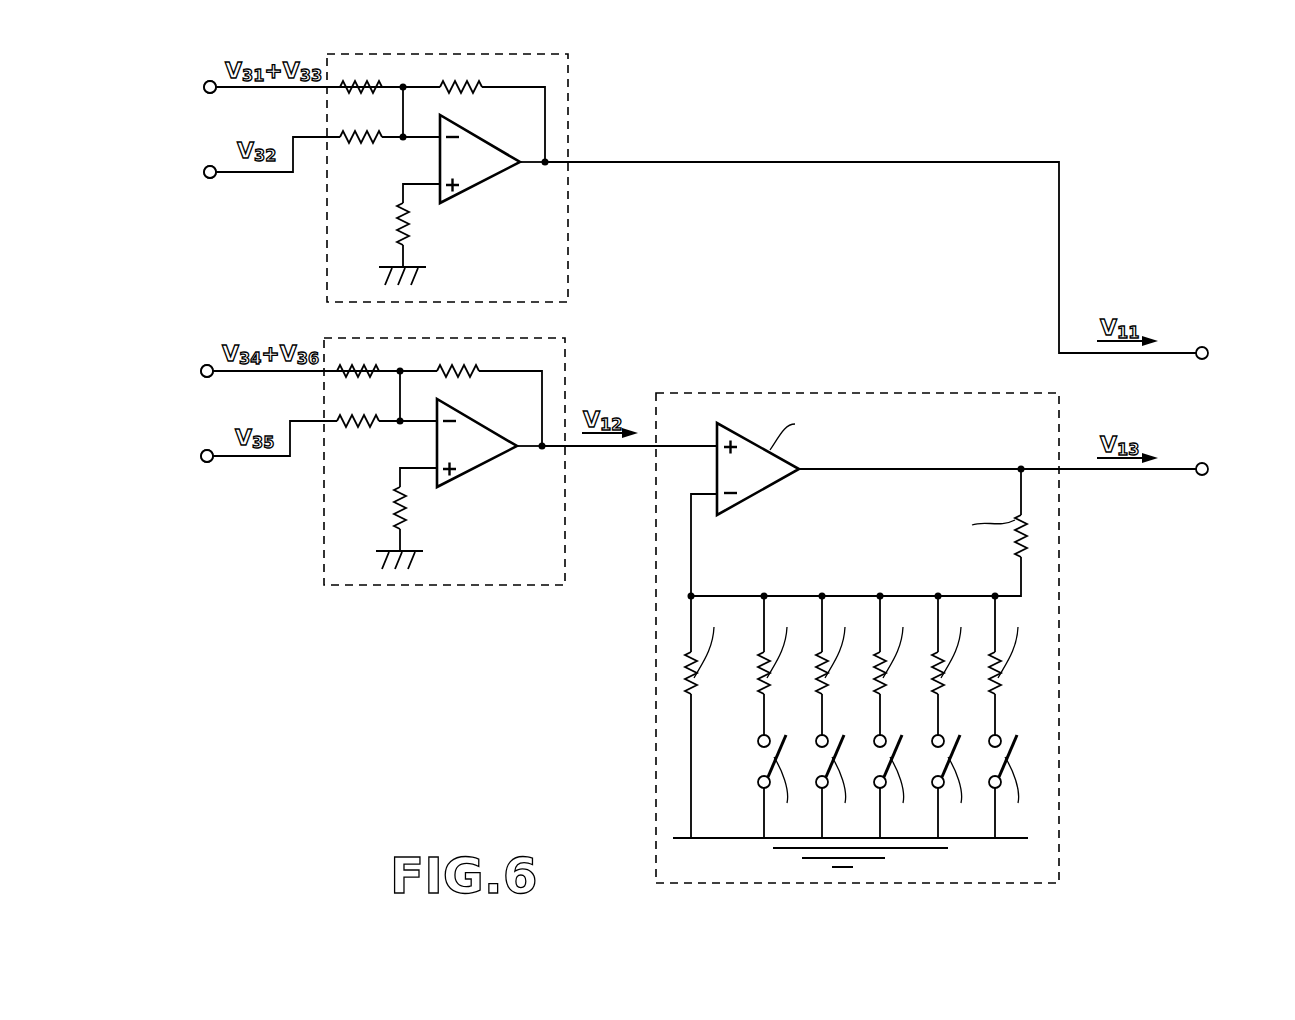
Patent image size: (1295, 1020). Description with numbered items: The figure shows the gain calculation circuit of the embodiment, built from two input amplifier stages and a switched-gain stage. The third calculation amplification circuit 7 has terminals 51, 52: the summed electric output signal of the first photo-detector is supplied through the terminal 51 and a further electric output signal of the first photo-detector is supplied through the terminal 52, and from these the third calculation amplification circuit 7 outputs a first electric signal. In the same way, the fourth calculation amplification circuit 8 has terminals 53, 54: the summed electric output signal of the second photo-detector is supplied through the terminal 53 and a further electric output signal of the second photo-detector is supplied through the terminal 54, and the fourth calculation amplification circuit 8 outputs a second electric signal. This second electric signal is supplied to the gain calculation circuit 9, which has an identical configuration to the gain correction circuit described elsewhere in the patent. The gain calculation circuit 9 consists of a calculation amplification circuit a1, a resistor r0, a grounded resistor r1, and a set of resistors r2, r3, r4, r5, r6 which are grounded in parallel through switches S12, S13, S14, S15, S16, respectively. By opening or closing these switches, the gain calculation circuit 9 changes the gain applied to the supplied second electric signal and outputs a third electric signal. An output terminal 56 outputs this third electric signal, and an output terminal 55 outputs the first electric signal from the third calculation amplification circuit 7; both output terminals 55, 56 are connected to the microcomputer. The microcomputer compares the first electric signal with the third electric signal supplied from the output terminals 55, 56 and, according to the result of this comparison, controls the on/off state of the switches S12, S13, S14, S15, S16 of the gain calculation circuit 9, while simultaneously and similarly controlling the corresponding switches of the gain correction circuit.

The third calculation amplification circuit 7 is at (568, 116).
The fourth calculation amplification circuit 8 is at (452, 588).
The gain calculation circuit 9 is at (926, 638).
The terminal 51 is at (204, 82).
The terminal 52 is at (204, 167).
The terminal 53 is at (203, 366).
The terminal 54 is at (203, 451).
The output terminal 55 is at (1206, 347).
The output terminal 56 is at (1206, 463).
The calculation amplification circuit a1 is at (798, 429).
The resistor r0 is at (982, 521).
The grounded resistor r1 is at (706, 716).
The resistor r2 is at (779, 716).
The resistor r3 is at (837, 716).
The resistor r4 is at (895, 716).
The resistor r5 is at (953, 716).
The resistor r6 is at (1010, 716).
The switch S12 is at (791, 796).
The switch S13 is at (849, 796).
The switch S14 is at (907, 796).
The switch S15 is at (965, 796).
The switch S16 is at (1060, 752).